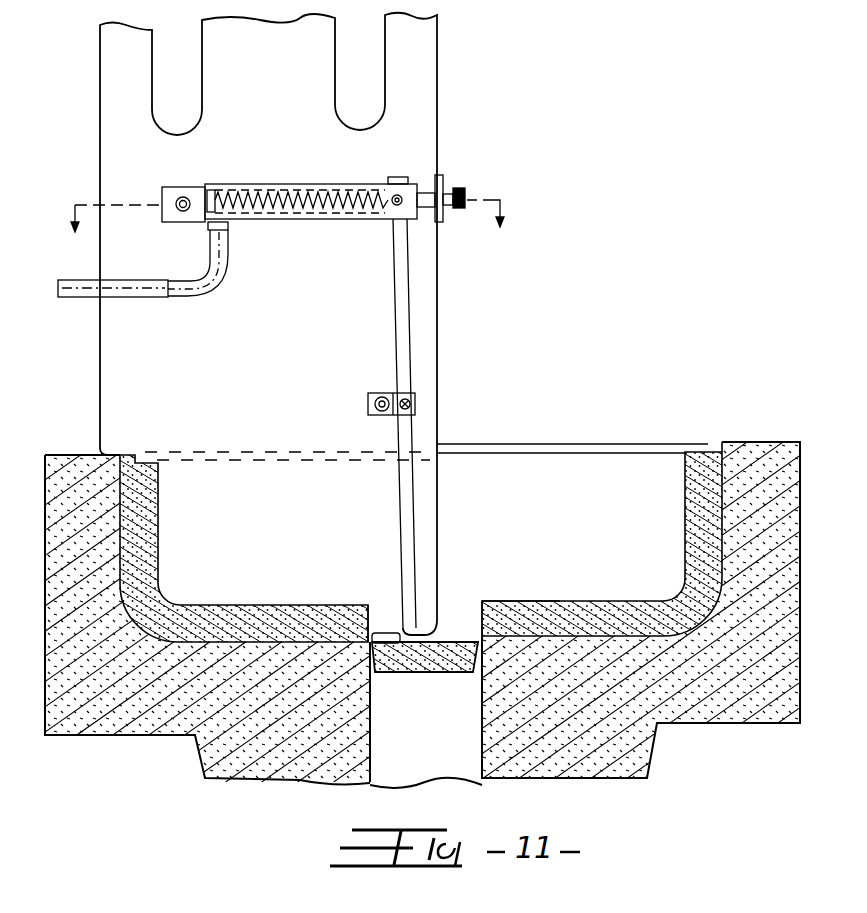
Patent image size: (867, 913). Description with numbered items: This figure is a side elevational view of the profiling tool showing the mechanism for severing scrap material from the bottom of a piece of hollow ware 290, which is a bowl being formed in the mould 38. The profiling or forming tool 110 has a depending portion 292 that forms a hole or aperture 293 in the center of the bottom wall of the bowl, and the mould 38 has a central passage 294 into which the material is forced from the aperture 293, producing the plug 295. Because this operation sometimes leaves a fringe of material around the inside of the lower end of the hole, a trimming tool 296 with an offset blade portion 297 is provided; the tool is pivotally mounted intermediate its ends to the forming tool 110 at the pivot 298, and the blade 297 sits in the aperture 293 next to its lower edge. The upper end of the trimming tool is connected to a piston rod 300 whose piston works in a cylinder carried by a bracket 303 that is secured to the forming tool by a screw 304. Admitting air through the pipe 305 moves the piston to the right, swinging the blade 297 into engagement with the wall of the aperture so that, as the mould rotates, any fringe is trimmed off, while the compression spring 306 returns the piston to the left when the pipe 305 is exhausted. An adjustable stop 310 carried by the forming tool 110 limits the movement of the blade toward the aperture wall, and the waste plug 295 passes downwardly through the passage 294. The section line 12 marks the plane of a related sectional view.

The section line 12- 12 is at (284, 225).
The mould 38 is at (142, 735).
The forming tool 110 is at (404, 324).
The piece of hollow ware 290 is at (163, 493).
The depending portion 292 is at (458, 622).
The aperture 293 is at (470, 610).
The central passage 294 is at (426, 716).
The plug 295 is at (439, 668).
The trimming tool 296 is at (405, 540).
The offset blade portion 297 is at (385, 632).
The pivot mounting 298 is at (368, 404).
The piston rod 300 is at (393, 207).
The bracket 303 is at (197, 222).
The screw 304 is at (218, 161).
The pipe 305 is at (87, 298).
The compression spring 306 is at (268, 188).
The adjustable stop 310 is at (470, 192).